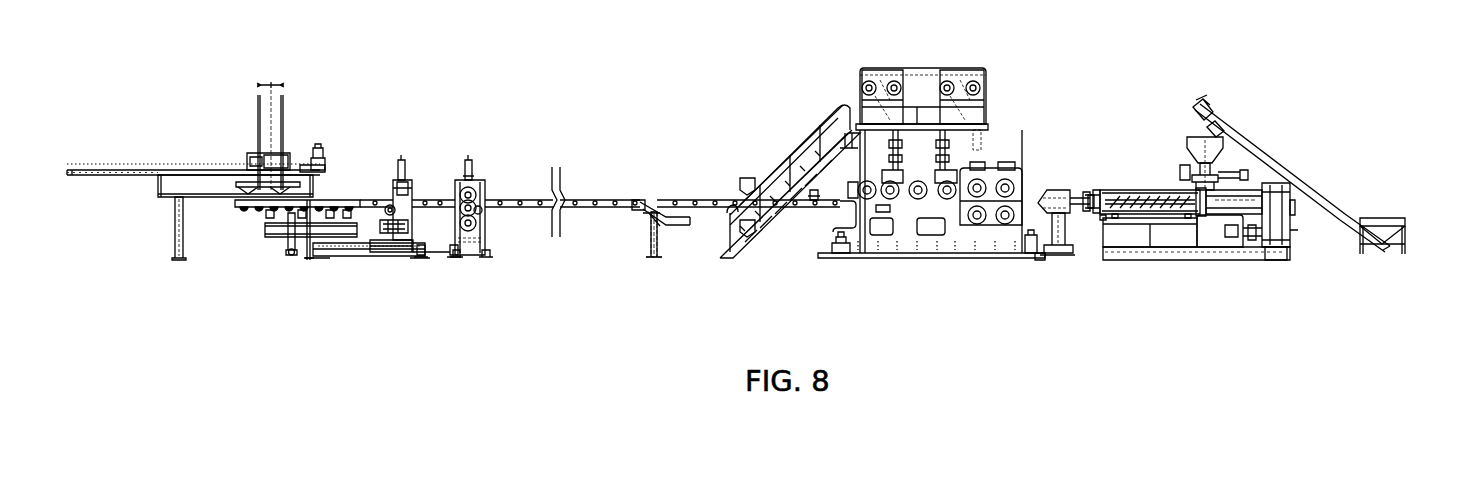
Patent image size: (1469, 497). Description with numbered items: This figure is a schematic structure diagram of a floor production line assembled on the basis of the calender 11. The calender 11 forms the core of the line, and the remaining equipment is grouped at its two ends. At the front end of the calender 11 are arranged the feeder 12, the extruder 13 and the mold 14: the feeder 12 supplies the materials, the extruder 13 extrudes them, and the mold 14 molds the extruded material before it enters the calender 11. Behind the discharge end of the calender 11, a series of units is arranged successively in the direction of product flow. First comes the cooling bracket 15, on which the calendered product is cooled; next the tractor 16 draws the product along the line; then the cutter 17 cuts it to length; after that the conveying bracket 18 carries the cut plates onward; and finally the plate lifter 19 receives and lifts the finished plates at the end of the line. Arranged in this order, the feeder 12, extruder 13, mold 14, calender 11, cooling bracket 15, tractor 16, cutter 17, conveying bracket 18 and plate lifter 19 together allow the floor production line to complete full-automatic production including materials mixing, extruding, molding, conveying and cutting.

The calender 11 is at (918, 65).
The feeder 12 is at (1383, 221).
The extruder 13 is at (1191, 137).
The mold 14 is at (1063, 193).
The cooling bracket 15 is at (614, 200).
The tractor 16 is at (470, 160).
The cutter 17 is at (410, 160).
The conveying bracket 18 is at (358, 197).
The plate lifter 19 is at (206, 170).